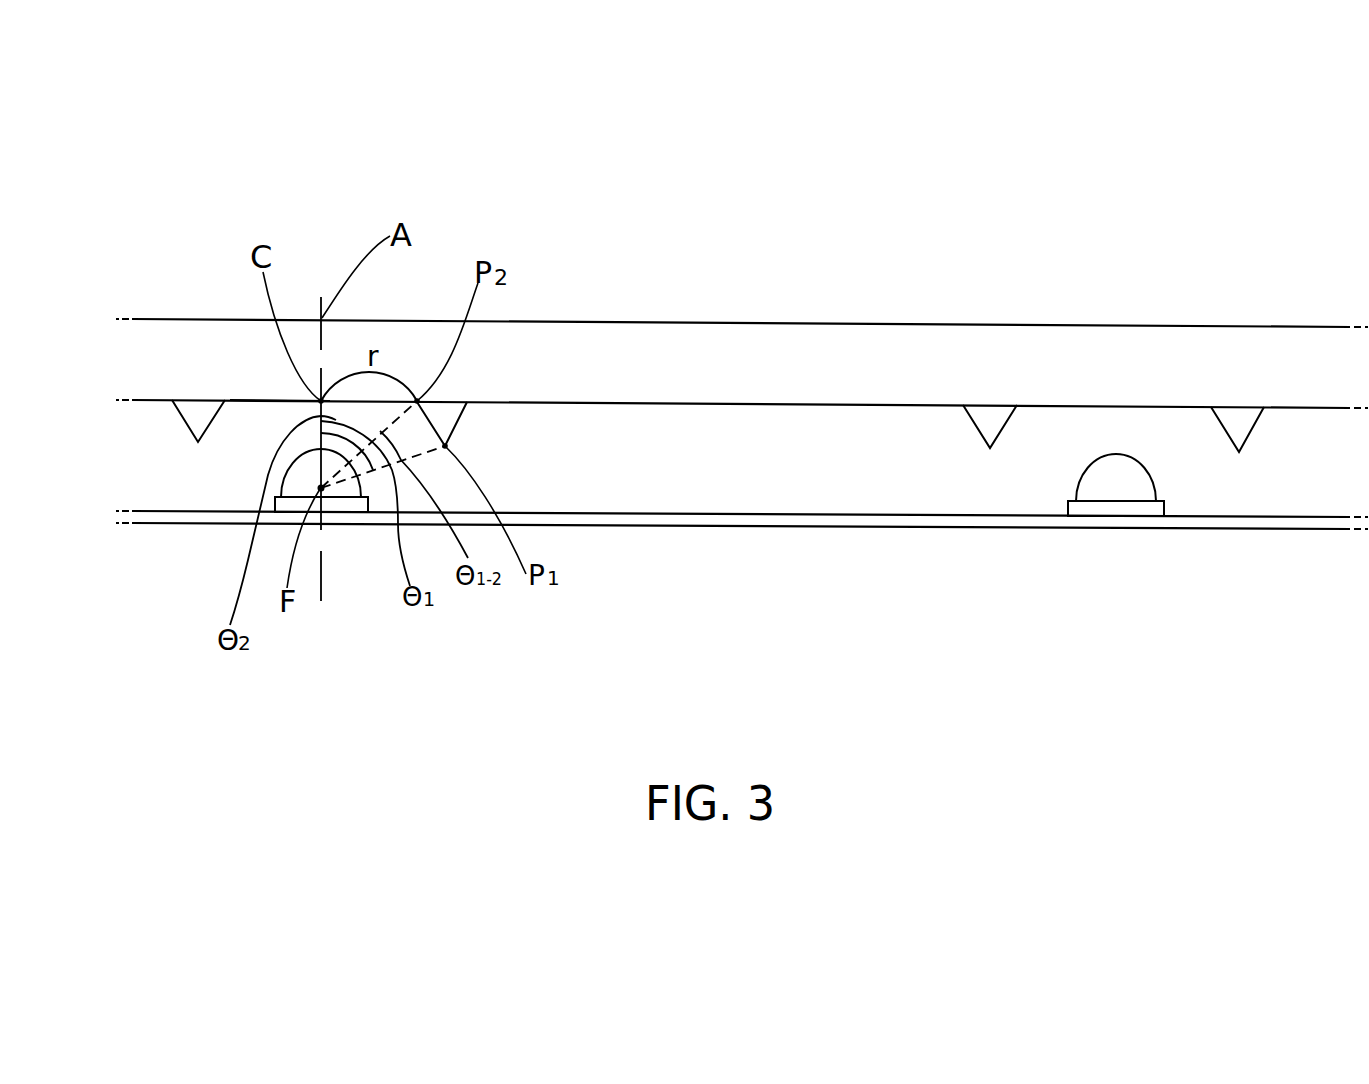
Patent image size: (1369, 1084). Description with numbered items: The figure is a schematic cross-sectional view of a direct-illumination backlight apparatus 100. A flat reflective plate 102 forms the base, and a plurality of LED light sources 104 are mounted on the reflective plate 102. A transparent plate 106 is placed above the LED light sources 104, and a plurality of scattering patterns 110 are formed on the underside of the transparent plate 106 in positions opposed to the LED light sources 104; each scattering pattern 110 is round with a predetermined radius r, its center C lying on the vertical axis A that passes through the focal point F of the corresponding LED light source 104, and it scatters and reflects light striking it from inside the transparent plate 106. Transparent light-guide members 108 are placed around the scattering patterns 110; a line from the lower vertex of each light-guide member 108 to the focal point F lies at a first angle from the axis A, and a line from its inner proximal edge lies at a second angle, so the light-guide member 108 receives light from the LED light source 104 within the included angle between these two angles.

The direct-illumination backlight apparatus 100 is at (730, 228).
The flat reflective plate 102 is at (162, 518).
The LED light source 104 is at (1109, 482).
The transparent plate 106 is at (164, 347).
The transparent light-guide member 108 is at (188, 417).
The scattering pattern 110 is at (247, 402).